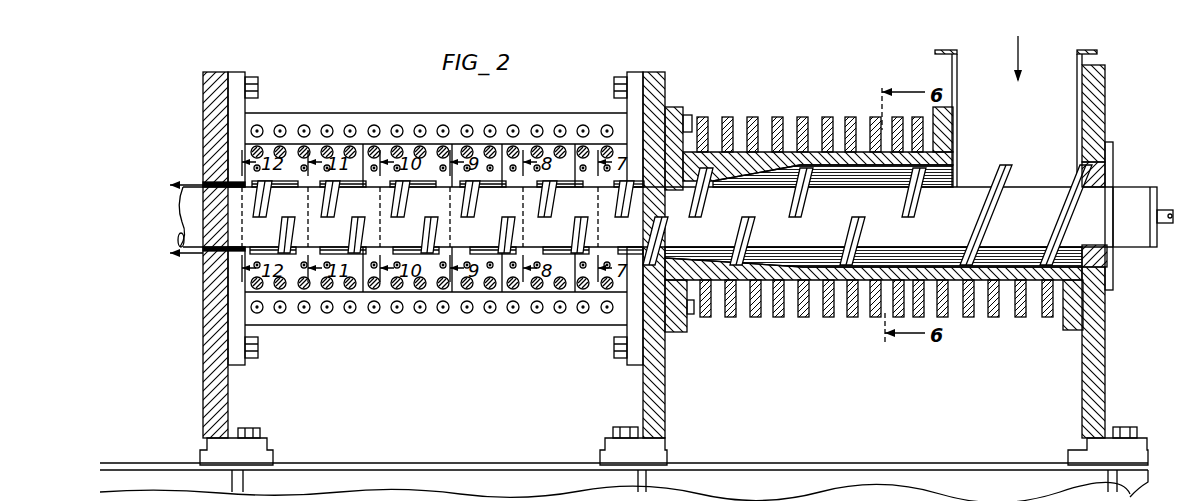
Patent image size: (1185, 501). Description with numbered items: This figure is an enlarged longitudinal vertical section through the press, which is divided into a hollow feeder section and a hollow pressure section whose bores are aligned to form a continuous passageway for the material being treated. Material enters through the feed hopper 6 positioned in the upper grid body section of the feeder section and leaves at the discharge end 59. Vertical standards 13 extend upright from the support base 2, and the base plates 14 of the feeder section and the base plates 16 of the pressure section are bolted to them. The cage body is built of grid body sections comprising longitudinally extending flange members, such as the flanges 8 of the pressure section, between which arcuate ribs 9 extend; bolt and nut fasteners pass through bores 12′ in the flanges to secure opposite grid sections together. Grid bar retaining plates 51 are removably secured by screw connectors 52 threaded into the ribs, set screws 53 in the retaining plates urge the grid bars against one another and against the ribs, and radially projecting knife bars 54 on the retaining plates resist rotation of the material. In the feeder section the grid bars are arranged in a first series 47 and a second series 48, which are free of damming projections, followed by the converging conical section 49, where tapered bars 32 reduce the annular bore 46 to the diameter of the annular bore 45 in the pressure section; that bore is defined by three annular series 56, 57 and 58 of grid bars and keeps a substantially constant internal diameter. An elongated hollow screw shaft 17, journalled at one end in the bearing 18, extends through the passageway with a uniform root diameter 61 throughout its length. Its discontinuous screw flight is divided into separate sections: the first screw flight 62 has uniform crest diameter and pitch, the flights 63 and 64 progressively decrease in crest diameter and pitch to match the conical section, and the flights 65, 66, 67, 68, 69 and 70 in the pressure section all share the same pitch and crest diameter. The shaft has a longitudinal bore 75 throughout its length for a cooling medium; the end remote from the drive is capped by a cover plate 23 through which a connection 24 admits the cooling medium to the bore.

The support base 2 is at (882, 465).
The feed hopper 6 is at (1080, 52).
The flange members 8 is at (476, 124).
The arcuate ribs 9 is at (772, 117).
The bores 12′ is at (325, 313).
The vertical standards 13 is at (218, 404).
The base plates of the feeder section 14 is at (670, 118).
The base plates of the pressure section 16 is at (247, 366).
The screw shaft 17 is at (1128, 198).
The bearing 18 is at (1104, 171).
The cover plate 23 is at (1163, 210).
The connection 24 is at (1165, 226).
The inclined grid bars 32 is at (713, 172).
The annular bore of the pressure section 45 is at (575, 180).
The annular bore of the feeder section 46 is at (958, 168).
The first series of grid bars 47 is at (997, 258).
The second series of grid bars 48 is at (903, 258).
The converging conical section 49 is at (697, 250).
The grid bar retaining plates 51 is at (288, 152).
The screw connectors 52 is at (394, 152).
The set screws 53 is at (362, 178).
The knife bars 54 is at (538, 184).
The first annular series of grid bars 56 is at (573, 284).
The second annular series of grid bars 57 is at (408, 288).
The third annular series of grid bars 58 is at (290, 282).
The discharge end 59 is at (203, 170).
The uniform root diameter 61 is at (1030, 186).
The first screw flight 62 is at (997, 172).
The screw flight 63 is at (823, 178).
The screw flight 64 is at (753, 251).
The screw flight 65 is at (627, 203).
The screw flight 66 is at (549, 203).
The screw flight 67 is at (471, 203).
The screw flight 68 is at (404, 203).
The screw flight 69 is at (331, 203).
The screw flight 70 is at (264, 203).
The longitudinal bore 75 is at (178, 246).